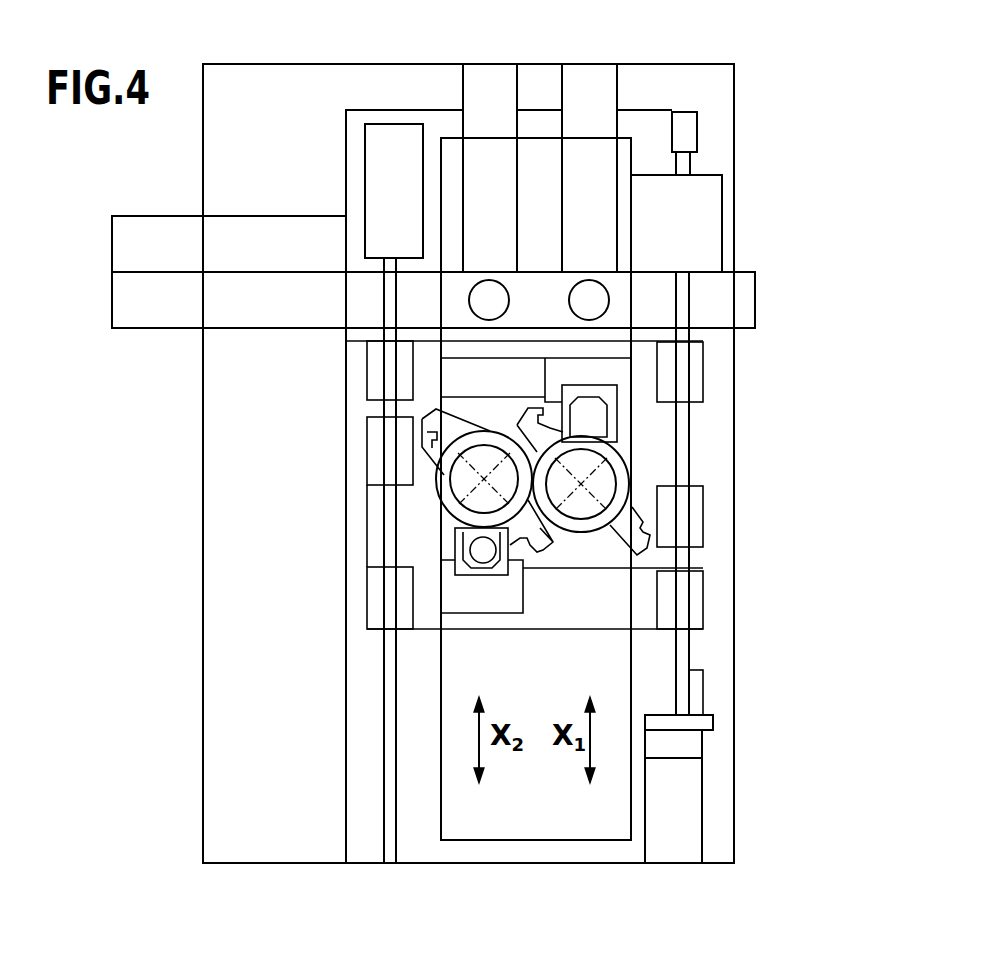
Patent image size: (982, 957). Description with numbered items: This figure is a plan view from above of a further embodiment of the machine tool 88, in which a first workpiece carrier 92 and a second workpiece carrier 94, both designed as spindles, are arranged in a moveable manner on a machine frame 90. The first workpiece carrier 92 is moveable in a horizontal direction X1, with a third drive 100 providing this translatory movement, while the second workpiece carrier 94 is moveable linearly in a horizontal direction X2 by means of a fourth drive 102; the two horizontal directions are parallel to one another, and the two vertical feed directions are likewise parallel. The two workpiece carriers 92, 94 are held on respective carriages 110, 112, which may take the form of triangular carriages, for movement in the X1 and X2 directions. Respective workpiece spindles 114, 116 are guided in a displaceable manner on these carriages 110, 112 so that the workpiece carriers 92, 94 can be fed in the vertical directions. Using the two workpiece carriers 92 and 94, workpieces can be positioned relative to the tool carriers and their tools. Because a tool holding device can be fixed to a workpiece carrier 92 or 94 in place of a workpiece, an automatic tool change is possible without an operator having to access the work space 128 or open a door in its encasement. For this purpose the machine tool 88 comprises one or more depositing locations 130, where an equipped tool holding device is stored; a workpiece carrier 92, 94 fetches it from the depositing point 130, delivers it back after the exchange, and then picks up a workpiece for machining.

The machine tool 88 is at (790, 352).
The machine frame 90 is at (353, 855).
The first workpiece carrier 92 is at (597, 482).
The second workpiece carrier 94 is at (470, 481).
The third drive 100 is at (690, 777).
The fourth drive 102 is at (390, 147).
The carriage 110 is at (605, 557).
The carriage 112 is at (467, 630).
The workpiece spindle 114 is at (620, 493).
The workpiece spindle 116 is at (432, 415).
The work space 128 is at (573, 567).
The depositing location 130 is at (688, 227).